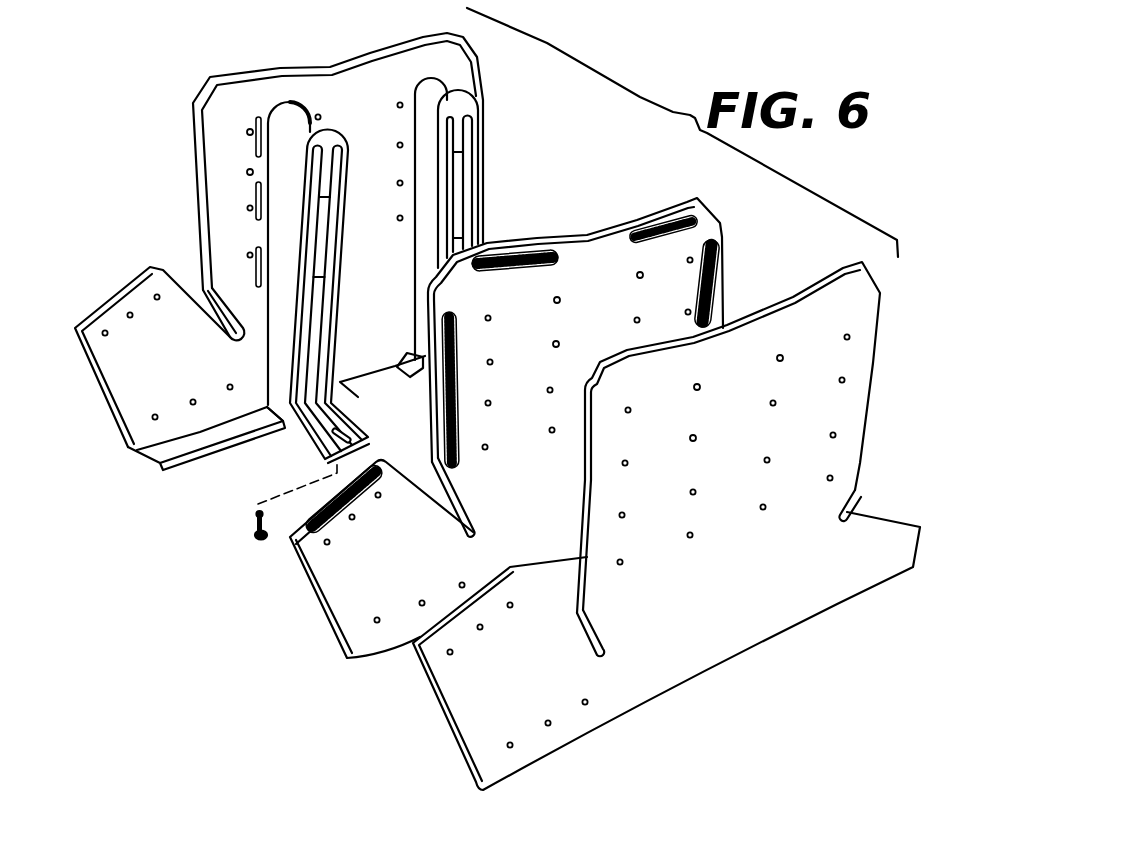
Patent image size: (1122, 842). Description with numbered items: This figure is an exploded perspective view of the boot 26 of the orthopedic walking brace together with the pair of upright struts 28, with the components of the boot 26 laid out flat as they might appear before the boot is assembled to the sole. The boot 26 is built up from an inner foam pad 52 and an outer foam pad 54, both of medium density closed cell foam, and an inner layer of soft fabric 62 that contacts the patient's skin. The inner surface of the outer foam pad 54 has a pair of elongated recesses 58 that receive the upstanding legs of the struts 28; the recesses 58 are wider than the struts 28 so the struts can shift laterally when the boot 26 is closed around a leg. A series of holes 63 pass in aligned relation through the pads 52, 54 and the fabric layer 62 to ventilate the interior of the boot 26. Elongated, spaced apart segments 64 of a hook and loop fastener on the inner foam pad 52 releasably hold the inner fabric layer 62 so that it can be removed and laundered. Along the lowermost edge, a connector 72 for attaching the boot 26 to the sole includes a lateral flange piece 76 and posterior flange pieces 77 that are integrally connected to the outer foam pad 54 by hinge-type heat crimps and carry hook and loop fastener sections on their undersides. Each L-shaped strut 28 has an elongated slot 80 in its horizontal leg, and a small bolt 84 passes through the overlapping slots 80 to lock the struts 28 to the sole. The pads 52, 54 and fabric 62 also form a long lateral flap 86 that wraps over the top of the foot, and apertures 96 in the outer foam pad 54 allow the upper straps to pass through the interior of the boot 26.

The boot 26 is at (268, 671).
The upright struts 28 is at (343, 267).
The inner foam pad 52 is at (603, 245).
The outer foam pad 54 is at (358, 77).
The elongated recesses 58 is at (290, 110).
The inner layer of soft fabric 62 is at (853, 277).
The holes 63 is at (249, 170).
The segments of hook and loop fastener 64 is at (718, 257).
The connector 72 is at (122, 467).
The lateral flange piece 76 is at (170, 467).
The posterior flange pieces 77 is at (348, 393).
The elongated slot 80 is at (362, 428).
The bolt 84 is at (250, 533).
The lateral flap 86 is at (123, 385).
The apertures 96 is at (258, 250).